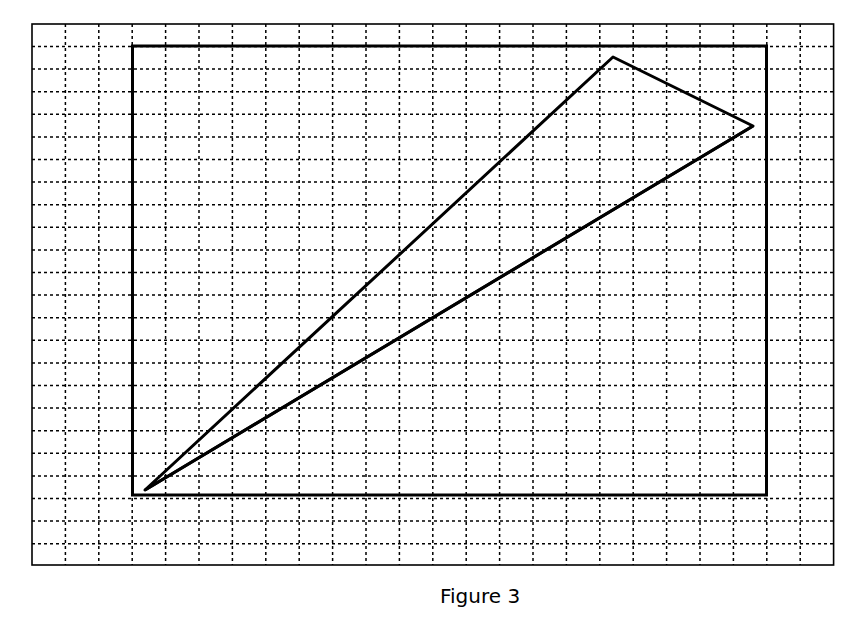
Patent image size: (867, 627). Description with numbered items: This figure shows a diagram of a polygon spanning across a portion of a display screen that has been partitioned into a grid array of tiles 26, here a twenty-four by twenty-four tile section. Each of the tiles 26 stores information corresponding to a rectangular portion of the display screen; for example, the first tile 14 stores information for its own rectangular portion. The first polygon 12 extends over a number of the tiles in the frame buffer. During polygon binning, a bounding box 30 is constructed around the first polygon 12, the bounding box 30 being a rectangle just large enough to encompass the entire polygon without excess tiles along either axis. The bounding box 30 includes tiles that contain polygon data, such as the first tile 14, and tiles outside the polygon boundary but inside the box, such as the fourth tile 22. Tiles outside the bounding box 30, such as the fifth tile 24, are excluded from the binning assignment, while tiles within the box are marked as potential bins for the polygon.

The first polygon 12 is at (449, 273).
The first tile 14 is at (418, 308).
The fourth tile 22 is at (316, 173).
The fifth tile 24 is at (82, 168).
The tiles 26 is at (433, 294).
The bounding box 30 is at (345, 55).